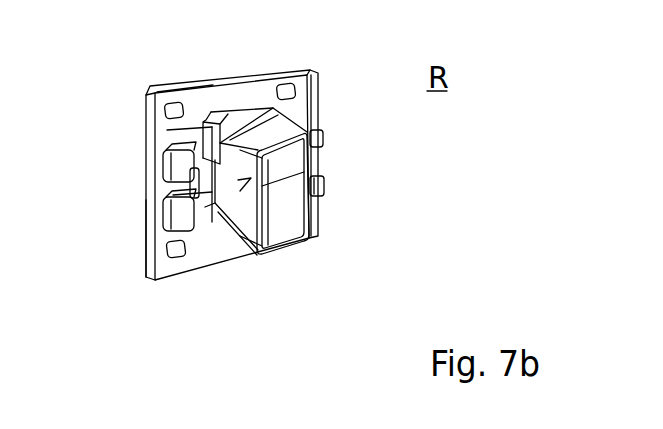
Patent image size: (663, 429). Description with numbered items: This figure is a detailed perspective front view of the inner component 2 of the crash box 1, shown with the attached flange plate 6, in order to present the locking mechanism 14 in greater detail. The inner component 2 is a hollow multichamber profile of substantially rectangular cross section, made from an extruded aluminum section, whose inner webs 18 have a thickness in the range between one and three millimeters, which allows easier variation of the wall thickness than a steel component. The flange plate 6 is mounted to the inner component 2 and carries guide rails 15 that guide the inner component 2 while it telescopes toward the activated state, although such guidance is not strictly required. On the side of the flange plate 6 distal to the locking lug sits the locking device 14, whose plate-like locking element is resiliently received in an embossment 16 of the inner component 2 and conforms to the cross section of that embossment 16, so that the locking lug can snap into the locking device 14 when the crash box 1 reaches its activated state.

The crash box 1 is at (130, 110).
The inner component 2 is at (275, 241).
The flange plate 6 is at (248, 90).
The locking device 14 is at (135, 262).
The guide rails 15 is at (224, 122).
The embossment 16 is at (240, 191).
The inner webs 18 is at (270, 222).